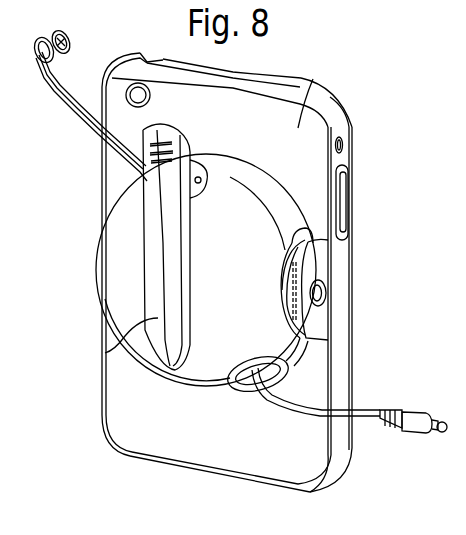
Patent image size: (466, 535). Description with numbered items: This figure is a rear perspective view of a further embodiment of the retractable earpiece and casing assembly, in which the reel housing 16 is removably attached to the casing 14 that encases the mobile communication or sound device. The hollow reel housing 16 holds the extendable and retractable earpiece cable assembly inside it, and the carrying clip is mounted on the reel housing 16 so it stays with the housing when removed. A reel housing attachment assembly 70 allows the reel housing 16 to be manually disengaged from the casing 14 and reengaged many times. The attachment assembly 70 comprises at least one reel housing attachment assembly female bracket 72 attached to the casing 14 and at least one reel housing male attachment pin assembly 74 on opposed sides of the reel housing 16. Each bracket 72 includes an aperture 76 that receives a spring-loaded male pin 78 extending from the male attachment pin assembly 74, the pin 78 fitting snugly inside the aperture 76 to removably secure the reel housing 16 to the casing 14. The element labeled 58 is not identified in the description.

The casing 14 is at (333, 102).
The reel housing 16 is at (218, 177).
The base plate 58 is at (105, 353).
The reel housing attachment assembly 70 is at (100, 257).
The reel housing attachment assembly female bracket 72 is at (312, 342).
The reel housing male attachment pin assembly 74 is at (322, 320).
The aperture 76 is at (322, 306).
The spring-loaded male pin 78 is at (324, 288).